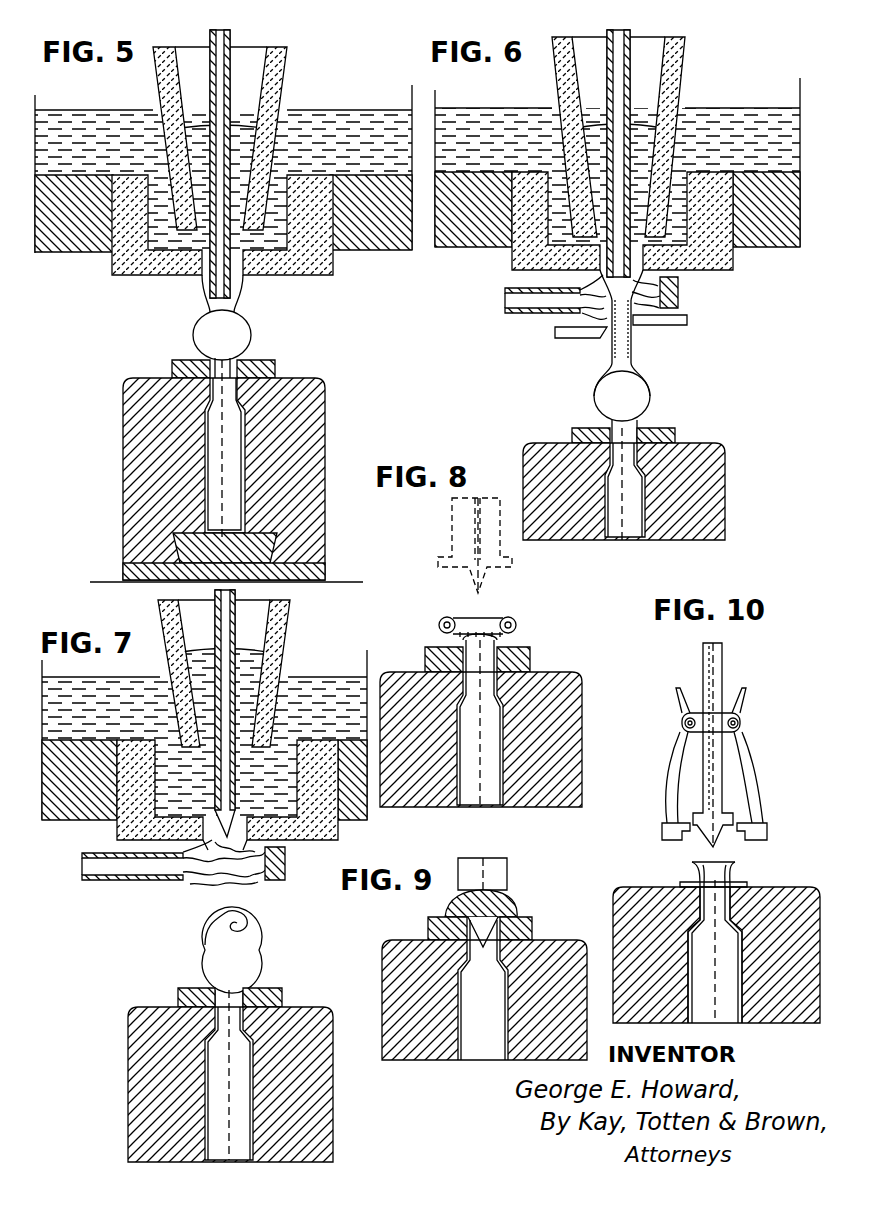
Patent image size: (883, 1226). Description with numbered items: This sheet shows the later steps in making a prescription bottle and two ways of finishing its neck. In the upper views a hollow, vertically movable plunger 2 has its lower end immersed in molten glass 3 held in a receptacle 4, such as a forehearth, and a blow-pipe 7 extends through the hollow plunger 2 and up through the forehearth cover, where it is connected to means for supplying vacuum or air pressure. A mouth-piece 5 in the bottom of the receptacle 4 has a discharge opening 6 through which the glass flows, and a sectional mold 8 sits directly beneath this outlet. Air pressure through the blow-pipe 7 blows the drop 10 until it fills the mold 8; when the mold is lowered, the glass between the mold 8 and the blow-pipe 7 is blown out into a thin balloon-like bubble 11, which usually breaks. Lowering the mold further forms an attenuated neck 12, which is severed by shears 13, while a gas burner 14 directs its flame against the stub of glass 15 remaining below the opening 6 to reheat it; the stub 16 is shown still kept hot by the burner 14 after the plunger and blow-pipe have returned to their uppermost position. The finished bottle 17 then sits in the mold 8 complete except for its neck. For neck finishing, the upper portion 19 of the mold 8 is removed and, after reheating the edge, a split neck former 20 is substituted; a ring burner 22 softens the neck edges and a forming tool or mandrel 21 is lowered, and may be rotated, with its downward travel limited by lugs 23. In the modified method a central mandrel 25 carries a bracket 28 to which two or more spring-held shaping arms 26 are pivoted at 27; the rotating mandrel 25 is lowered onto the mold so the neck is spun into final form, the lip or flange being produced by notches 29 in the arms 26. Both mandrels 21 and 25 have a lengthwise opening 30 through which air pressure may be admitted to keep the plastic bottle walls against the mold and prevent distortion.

In FIG. 5, the hollow plunger 2 is at (283, 59).
In FIG. 6, the hollow plunger 2 is at (685, 60).
In FIG. 7, the hollow plunger 2 is at (290, 610).
In FIG. 5, the molten glass 3 is at (366, 120).
In FIG. 6, the molten glass 3 is at (758, 117).
In FIG. 7, the molten glass 3 is at (331, 680).
In FIG. 5, the receptacle 4 is at (61, 242).
In FIG. 6, the receptacle 4 is at (455, 244).
In FIG. 7, the receptacle 4 is at (65, 810).
In FIG. 5, the mouth-piece 5 is at (129, 267).
In FIG. 6, the mouth-piece 5 is at (717, 258).
In FIG. 7, the mouth-piece 5 is at (310, 843).
In FIG. 5, the discharge opening 6 is at (200, 279).
In FIG. 6, the discharge opening 6 is at (600, 260).
In FIG. 7, the discharge opening 6 is at (337, 830).
In FIG. 5, the blow-pipe 7 is at (227, 92).
In FIG. 6, the blow-pipe 7 is at (627, 97).
In FIG. 7, the blow-pipe 7 is at (215, 622).
In FIG. 5, the mold 8 is at (310, 427).
In FIG. 6, the mold 8 is at (713, 480).
In FIG. 7, the mold 8 is at (310, 1053).
In FIG. 8, the mold 8 is at (570, 767).
In FIG. 9, the mold 8 is at (573, 979).
In FIG. 10, the mold 8 is at (790, 897).
In FIG. 5, the drop 10 is at (205, 455).
In FIG. 6, the drop 10 is at (647, 512).
In FIG. 5, the bubble 11 is at (251, 332).
In FIG. 6, the bubble 11 is at (651, 397).
In FIG. 7, the bubble 11 is at (262, 960).
In FIG. 6, the attenuated neck 12 is at (630, 345).
In FIG. 6, the shears 13 is at (687, 318).
In FIG. 6, the gas burner 14 is at (536, 312).
In FIG. 7, the gas burner 14 is at (112, 880).
In FIG. 6, the stub of glass 15 is at (680, 292).
In FIG. 6, the stub 16 is at (620, 297).
In FIG. 7, the stub 16 is at (223, 843).
In FIG. 7, the bottle 17 is at (207, 1082).
In FIG. 8, the bottle 17 is at (507, 733).
In FIG. 9, the bottle 17 is at (458, 987).
In FIG. 10, the bottle 17 is at (747, 993).
In FIG. 7, the upper portion of the mold 19 is at (183, 998).
In FIG. 8, the split neck former 20 is at (530, 655).
In FIG. 9, the split neck former 20 is at (450, 928).
In FIG. 8, the forming tool or mandrel 21 is at (451, 530).
In FIG. 9, the forming tool or mandrel 21 is at (507, 880).
In FIG. 8, the ring burner 22 is at (507, 620).
In FIG. 9, the lugs 23 is at (518, 907).
In FIG. 10, the central mandrel 25 is at (720, 780).
In FIG. 10, the shaping arms 26 is at (683, 763).
In FIG. 10, the pivots 27 is at (682, 724).
In FIG. 10, the bracket 28 is at (700, 716).
In FIG. 10, the notches 29 is at (682, 823).
In FIG. 8, the lengthwise opening 30 is at (470, 547).
In FIG. 9, the lengthwise opening 30 is at (483, 872).
In FIG. 10, the lengthwise opening 30 is at (725, 653).